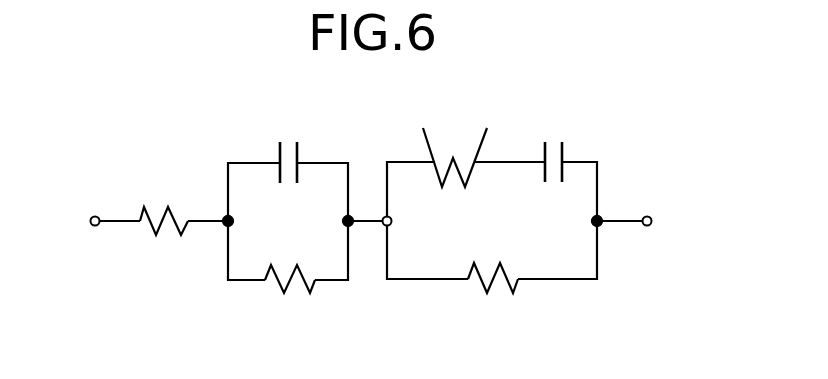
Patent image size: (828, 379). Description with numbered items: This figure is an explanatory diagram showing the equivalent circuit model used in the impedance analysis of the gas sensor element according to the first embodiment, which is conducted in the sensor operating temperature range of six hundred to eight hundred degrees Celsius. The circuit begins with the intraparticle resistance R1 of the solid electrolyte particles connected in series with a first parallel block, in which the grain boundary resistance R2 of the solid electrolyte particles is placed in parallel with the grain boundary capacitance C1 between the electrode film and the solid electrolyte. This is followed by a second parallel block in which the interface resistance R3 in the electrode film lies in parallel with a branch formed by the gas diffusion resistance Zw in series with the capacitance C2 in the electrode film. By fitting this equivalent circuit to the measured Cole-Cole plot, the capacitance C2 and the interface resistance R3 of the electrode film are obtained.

The intraparticle resistance R1 is at (164, 238).
The grain boundary resistance R2 is at (290, 299).
The interface resistance R3 is at (493, 298).
The grain boundary capacitance C1 is at (287, 147).
The capacitance in the electrode film C2 is at (553, 147).
The gas diffusion resistance Zw is at (455, 139).